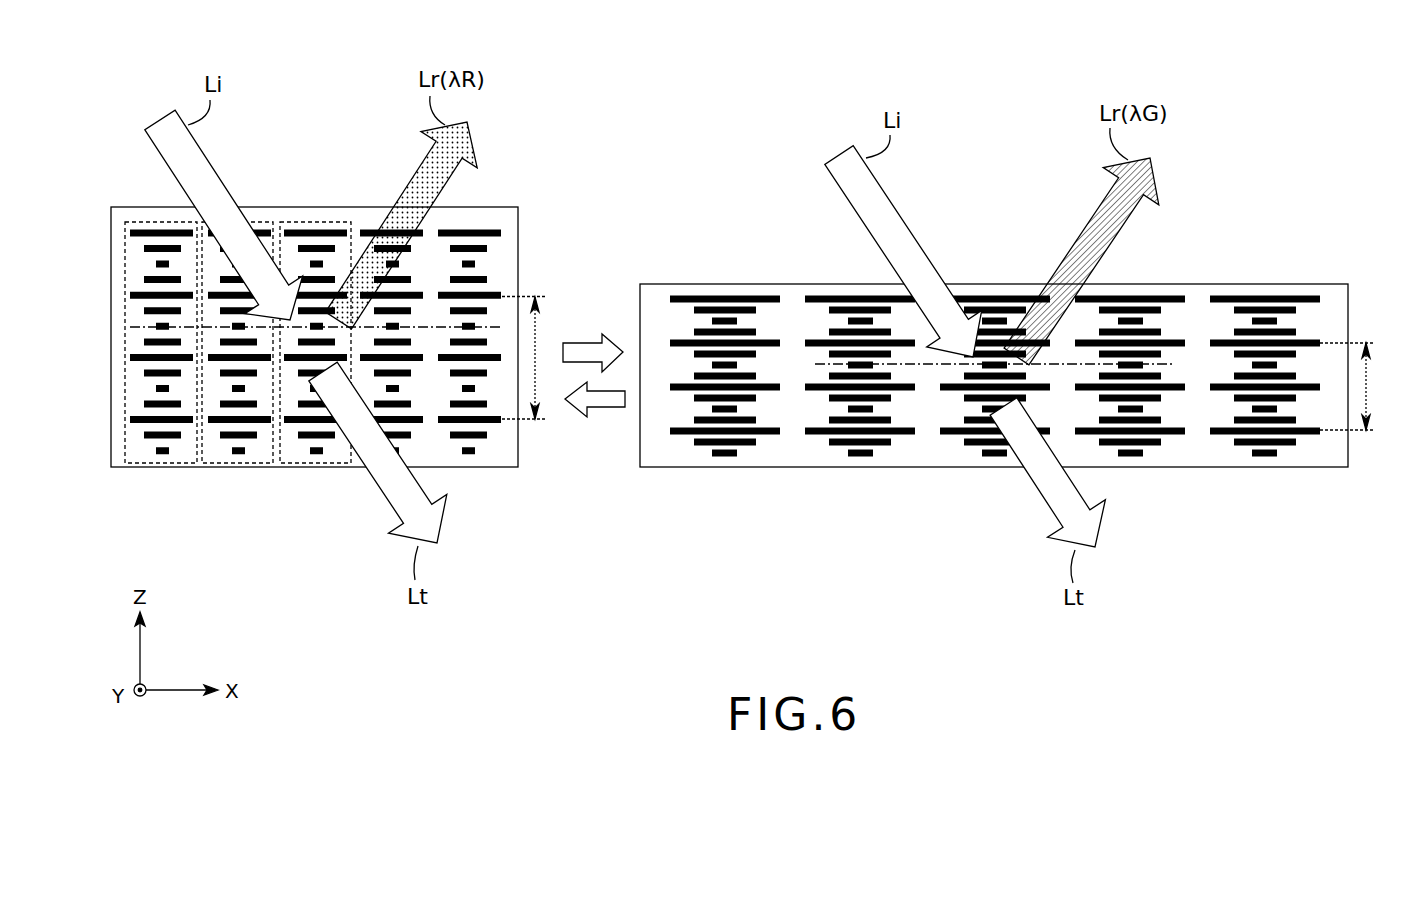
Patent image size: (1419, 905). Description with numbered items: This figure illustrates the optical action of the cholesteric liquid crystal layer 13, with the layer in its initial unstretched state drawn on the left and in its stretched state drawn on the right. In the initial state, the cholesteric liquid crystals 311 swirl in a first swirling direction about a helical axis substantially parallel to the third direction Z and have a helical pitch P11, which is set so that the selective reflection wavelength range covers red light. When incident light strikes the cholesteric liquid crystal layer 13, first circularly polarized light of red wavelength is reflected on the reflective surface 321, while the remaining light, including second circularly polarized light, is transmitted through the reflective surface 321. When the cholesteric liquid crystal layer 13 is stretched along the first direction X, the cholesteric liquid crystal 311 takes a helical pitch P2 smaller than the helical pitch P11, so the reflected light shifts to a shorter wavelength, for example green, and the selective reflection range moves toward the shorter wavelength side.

The cholesteric liquid crystal layer 13 is at (1348, 284).
The cholesteric liquid crystal 311 is at (162, 468).
The reflective surface 321 is at (430, 325).
The helical pitch P11 is at (536, 328).
The helical pitch P2 is at (1368, 378).